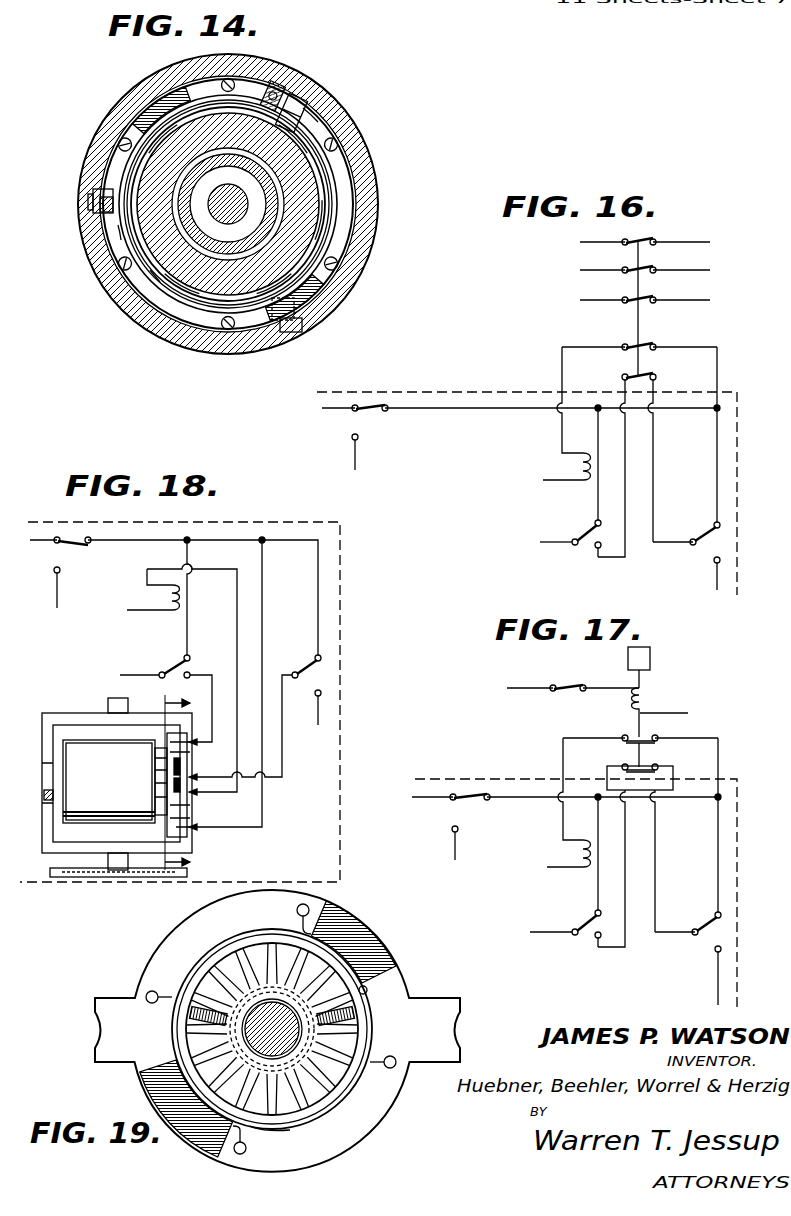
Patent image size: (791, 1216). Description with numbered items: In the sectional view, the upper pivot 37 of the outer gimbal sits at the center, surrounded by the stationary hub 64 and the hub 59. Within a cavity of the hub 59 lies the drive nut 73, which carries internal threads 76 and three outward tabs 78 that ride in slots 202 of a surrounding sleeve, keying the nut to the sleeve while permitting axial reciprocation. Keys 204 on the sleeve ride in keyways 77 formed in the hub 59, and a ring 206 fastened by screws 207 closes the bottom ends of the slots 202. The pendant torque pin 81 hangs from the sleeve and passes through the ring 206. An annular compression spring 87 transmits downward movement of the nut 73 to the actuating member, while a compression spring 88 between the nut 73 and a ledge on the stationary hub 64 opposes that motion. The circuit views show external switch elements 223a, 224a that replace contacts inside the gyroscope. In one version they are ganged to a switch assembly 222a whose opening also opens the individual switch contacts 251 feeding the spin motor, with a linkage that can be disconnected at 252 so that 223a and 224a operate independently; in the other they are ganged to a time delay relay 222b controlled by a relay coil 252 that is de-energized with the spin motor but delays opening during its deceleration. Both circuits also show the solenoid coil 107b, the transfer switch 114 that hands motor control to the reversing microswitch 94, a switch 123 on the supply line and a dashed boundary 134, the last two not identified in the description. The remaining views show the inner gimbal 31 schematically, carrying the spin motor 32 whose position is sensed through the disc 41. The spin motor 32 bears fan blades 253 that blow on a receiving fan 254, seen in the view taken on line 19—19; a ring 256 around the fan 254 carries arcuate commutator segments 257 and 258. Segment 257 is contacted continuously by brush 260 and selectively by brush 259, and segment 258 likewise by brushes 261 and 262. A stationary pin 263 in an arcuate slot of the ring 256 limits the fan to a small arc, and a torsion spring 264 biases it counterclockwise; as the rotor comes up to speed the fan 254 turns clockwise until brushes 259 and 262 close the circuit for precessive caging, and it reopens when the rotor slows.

In FIG. 14, the upper pivot 37 is at (233, 197).
In FIG. 14, the hub 59 is at (370, 202).
In FIG. 14, the stationary hub 64 is at (293, 245).
In FIG. 14, the drive nut 73 is at (160, 280).
In FIG. 14, the internal threads 76 is at (180, 123).
In FIG. 14, the keyways 77 is at (277, 100).
In FIG. 14, the tabs 78 is at (288, 110).
In FIG. 14, the torque pin 81 is at (97, 200).
In FIG. 14, the annular compression spring 87 is at (327, 185).
In FIG. 14, the compression spring 88 is at (318, 172).
In FIG. 14, the slots 202 is at (320, 112).
In FIG. 14, the keys 204 is at (100, 207).
In FIG. 14, the ring 206 is at (115, 232).
In FIG. 14, the screws 207 is at (122, 143).
In FIG. 16, the switch contacts 251 is at (650, 240).
In FIG. 16, the switch assembly 222a is at (637, 285).
In FIG. 17, the time delay relay 222b is at (638, 726).
In FIG. 16, the relay coil 252 is at (634, 320).
In FIG. 17, the relay coil 252 is at (650, 700).
In FIG. 16, the switch element 223a is at (655, 345).
In FIG. 17, the switch element 223a is at (655, 737).
In FIG. 16, the switch element 224a is at (654, 375).
In FIG. 17, the switch element 224a is at (655, 765).
In FIG. 16, the control unit boundary 134 is at (483, 391).
In FIG. 17, the control unit boundary 134 is at (504, 779).
In FIG. 16, the switch 123 is at (365, 412).
In FIG. 17, the switch 123 is at (468, 801).
In FIG. 16, the solenoid coil 107b is at (576, 465).
In FIG. 17, the solenoid coil 107b is at (577, 851).
In FIG. 16, the transfer switch 114 is at (585, 527).
In FIG. 17, the transfer switch 114 is at (590, 923).
In FIG. 16, the reversing microswitch 94 is at (710, 530).
In FIG. 17, the reversing microswitch 94 is at (710, 925).
In FIG. 18, the inner gimbal 31 is at (66, 714).
In FIG. 18, the spin motor 32 is at (109, 781).
In FIG. 18, the disc 41 is at (79, 877).
In FIG. 18, the section line 19 is at (161, 781).
In FIG. 18, the fan blades 253 is at (155, 789).
In FIG. 18, the receiving fan 254 is at (180, 752).
In FIG. 19, the receiving fan 254 is at (353, 1017).
In FIG. 19, the ring 256 is at (333, 1102).
In FIG. 19, the commutator segment 257 is at (212, 945).
In FIG. 19, the commutator segment 258 is at (287, 1127).
In FIG. 18, the brush 259 is at (168, 740).
In FIG. 19, the brush 259 is at (320, 907).
In FIG. 18, the brush 260 is at (194, 777).
In FIG. 19, the brush 260 is at (176, 990).
In FIG. 18, the brush 261 is at (191, 797).
In FIG. 19, the brush 261 is at (382, 1060).
In FIG. 18, the brush 262 is at (191, 838).
In FIG. 19, the brush 262 is at (247, 1149).
In FIG. 19, the stationary pin 263 is at (368, 989).
In FIG. 19, the torsion spring 264 is at (232, 1005).